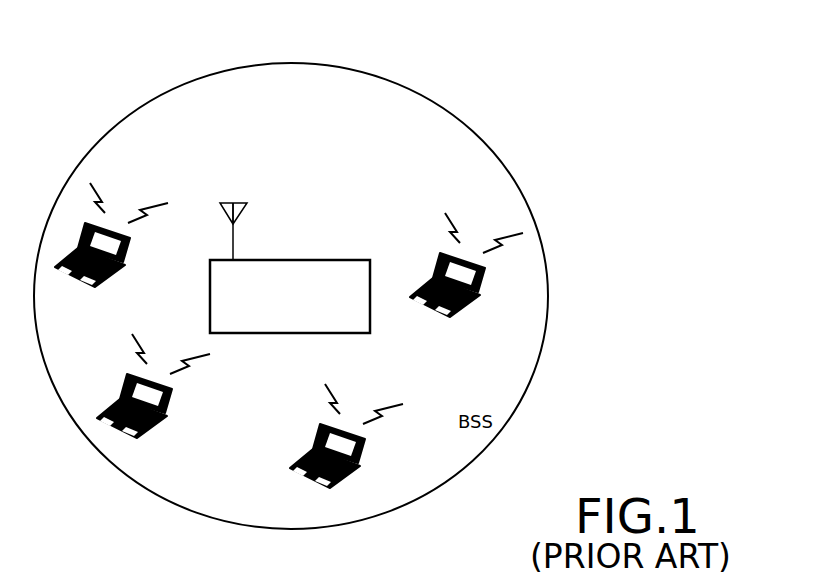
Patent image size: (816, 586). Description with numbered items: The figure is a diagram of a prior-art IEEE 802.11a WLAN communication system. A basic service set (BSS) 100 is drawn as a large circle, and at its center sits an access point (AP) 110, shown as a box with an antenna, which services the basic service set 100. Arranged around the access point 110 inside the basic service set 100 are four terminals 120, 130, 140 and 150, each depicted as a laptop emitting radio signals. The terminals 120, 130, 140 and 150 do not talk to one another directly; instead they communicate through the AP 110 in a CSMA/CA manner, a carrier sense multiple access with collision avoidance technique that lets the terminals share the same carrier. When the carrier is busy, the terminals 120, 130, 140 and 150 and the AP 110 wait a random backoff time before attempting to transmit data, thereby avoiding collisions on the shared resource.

The basic service set (BSS) 100 is at (290, 63).
The access point (AP) 110 is at (290, 260).
The terminal 120 is at (172, 405).
The terminal 130 is at (366, 455).
The terminal 140 is at (486, 281).
The terminal 150 is at (129, 251).